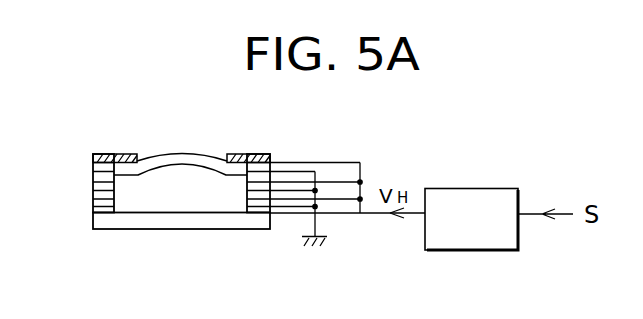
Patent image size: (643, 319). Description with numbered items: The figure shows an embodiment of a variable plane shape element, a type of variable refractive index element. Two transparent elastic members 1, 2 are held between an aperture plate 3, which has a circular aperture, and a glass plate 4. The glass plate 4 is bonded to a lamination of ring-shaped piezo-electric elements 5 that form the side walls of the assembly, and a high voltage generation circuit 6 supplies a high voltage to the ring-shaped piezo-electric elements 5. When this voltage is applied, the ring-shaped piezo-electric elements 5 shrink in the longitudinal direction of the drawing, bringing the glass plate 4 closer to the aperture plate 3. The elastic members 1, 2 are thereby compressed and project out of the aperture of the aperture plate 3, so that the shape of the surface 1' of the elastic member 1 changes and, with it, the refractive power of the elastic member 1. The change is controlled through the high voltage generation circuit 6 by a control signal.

The transparent elastic member 1 is at (182, 128).
The surface of the elastic member 1' is at (159, 124).
The transparent elastic member 2 is at (175, 182).
The aperture plate 3 is at (114, 153).
The glass plate 4 is at (121, 222).
The lamination of ring-shaped piezo-electric elements 5 is at (93, 185).
The high voltage generation circuit 6 is at (467, 188).